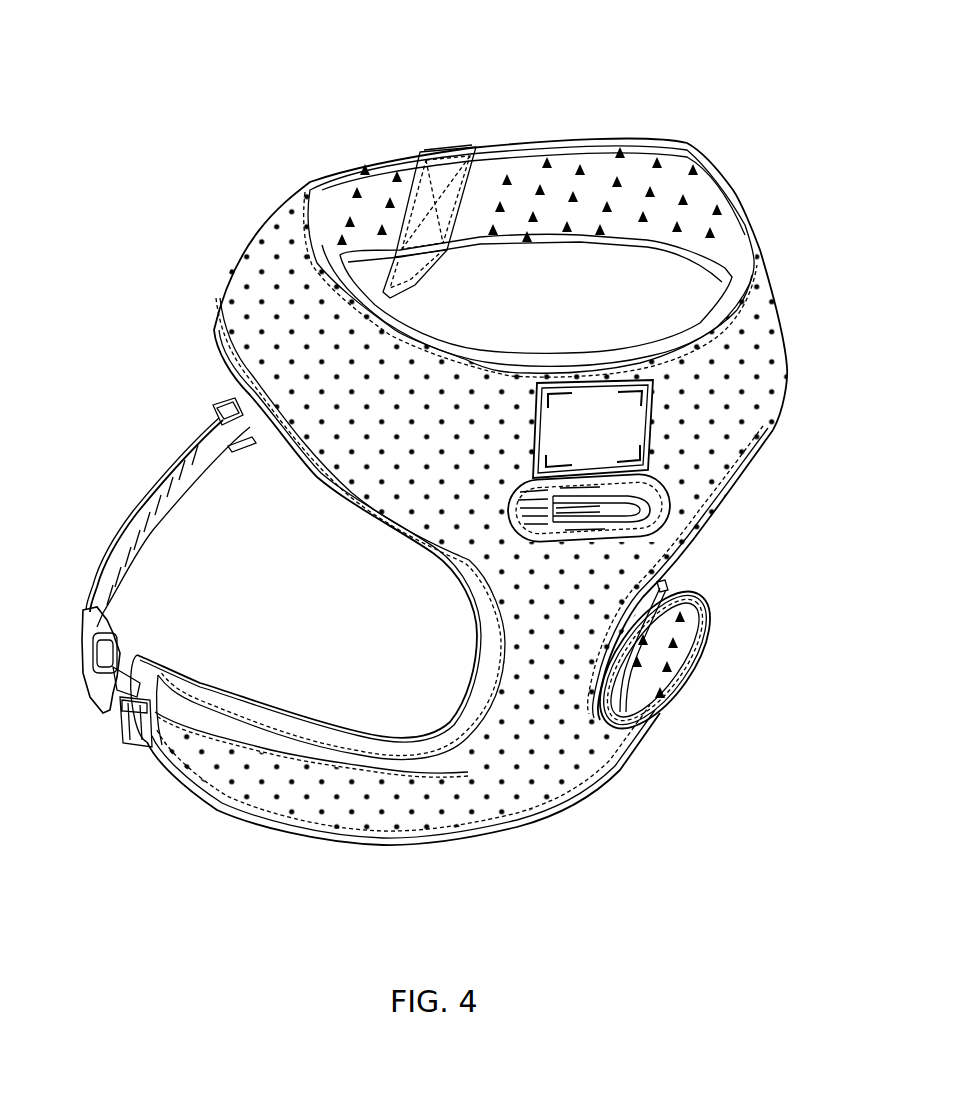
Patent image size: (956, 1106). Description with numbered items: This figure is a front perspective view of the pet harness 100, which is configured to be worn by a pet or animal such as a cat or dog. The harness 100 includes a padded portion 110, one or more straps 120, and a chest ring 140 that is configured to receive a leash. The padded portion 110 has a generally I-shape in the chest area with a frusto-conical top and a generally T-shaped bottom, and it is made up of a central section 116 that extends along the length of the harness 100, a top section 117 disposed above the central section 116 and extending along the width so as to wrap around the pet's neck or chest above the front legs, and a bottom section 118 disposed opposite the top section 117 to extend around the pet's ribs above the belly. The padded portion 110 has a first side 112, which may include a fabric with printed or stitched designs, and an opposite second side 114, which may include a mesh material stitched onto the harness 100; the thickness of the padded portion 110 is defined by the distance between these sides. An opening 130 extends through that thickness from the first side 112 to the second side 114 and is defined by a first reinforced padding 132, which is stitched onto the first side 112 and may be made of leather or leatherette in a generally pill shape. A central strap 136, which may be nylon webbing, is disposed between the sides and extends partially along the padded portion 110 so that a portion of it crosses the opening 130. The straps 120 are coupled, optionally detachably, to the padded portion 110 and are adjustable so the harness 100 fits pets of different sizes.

The harness 100 is at (152, 118).
The padded portion 110 is at (352, 493).
The first side 112 is at (262, 273).
The second side 114 is at (552, 182).
The central section 116 is at (563, 633).
The top section 117 is at (667, 393).
The bottom section 118 is at (497, 810).
The straps 120 is at (120, 528).
The opening 130 is at (500, 527).
The first reinforced padding 132 is at (655, 515).
The central strap 136 is at (647, 470).
The chest ring 140 is at (617, 520).